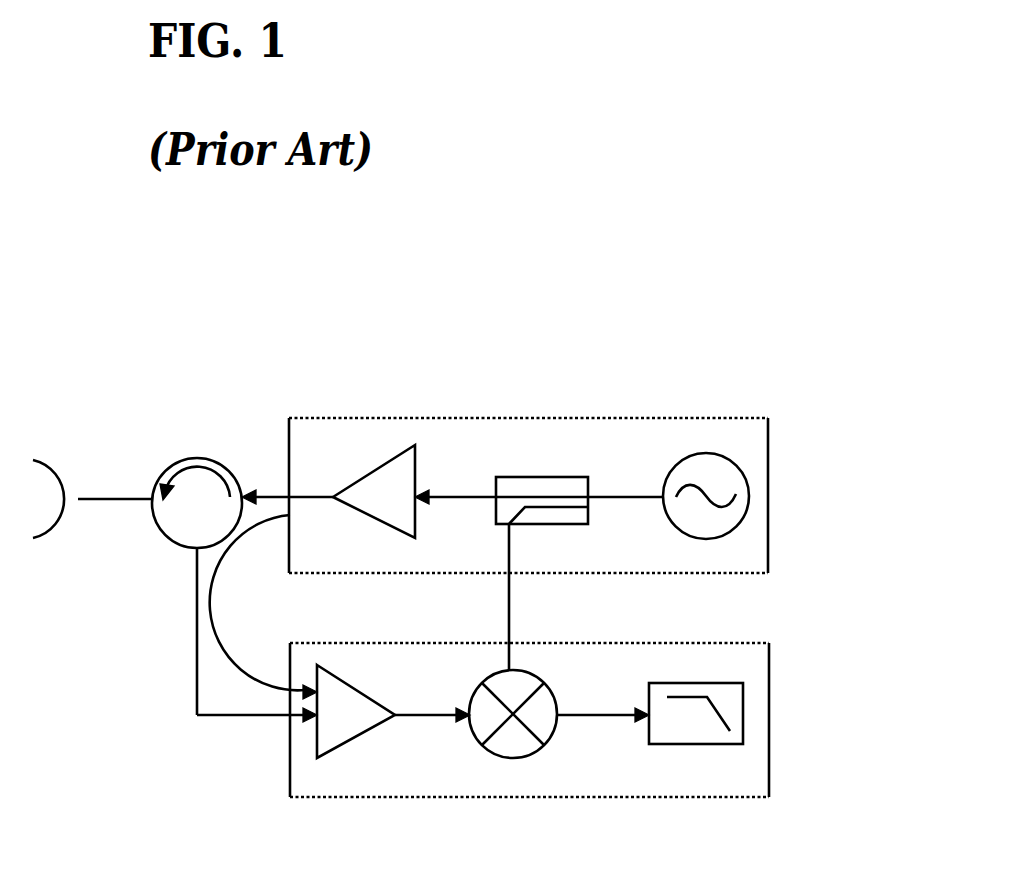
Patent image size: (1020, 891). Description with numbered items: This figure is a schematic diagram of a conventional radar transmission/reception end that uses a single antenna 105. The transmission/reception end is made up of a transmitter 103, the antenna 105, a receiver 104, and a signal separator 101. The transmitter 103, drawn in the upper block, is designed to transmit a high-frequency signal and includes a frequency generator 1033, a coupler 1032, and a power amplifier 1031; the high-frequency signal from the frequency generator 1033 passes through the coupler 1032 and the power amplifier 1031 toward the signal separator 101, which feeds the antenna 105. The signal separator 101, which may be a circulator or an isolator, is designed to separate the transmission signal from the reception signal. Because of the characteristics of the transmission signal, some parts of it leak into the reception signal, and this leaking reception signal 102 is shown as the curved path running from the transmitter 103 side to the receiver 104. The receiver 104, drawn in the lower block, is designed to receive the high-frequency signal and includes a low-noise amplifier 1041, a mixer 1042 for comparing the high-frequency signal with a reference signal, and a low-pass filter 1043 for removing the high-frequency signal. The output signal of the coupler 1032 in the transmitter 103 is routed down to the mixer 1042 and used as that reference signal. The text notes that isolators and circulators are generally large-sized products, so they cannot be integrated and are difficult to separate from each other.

The signal separator 101 is at (196, 458).
The leaking reception signal 102 is at (223, 623).
The transmitter 103 is at (752, 417).
The power amplifier 1031 is at (388, 460).
The coupler 1032 is at (533, 477).
The frequency generator 1033 is at (690, 453).
The receiver 104 is at (685, 797).
The low-noise amplifier 1041 is at (340, 747).
The mixer 1042 is at (507, 758).
The low-pass filter 1043 is at (743, 707).
The antenna 105 is at (68, 537).